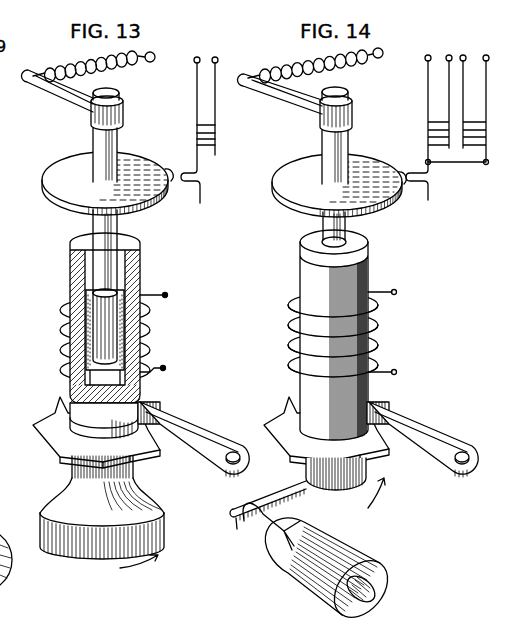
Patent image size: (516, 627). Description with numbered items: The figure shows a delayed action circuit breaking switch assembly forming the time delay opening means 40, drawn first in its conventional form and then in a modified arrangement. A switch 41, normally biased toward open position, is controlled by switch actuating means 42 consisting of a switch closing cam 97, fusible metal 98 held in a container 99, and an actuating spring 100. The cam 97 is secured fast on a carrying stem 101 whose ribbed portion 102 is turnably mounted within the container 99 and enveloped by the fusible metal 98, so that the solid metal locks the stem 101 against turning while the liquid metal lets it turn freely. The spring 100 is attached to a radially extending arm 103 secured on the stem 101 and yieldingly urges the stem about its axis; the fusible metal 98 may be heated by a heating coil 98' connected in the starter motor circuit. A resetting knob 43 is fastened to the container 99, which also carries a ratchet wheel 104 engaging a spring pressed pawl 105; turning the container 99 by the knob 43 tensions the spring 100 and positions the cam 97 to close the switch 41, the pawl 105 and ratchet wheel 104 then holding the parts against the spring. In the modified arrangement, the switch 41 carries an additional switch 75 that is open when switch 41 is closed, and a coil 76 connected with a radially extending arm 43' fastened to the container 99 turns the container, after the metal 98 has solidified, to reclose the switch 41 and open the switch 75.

In FIG. 13, the time delay opening means 40 is at (62, 227).
In FIG. 14, the time delay opening means 40 is at (297, 222).
In FIG. 13, the switch 41 is at (200, 125).
In FIG. 14, the switch 41 is at (438, 125).
In FIG. 13, the switch actuating means 42 is at (51, 337).
In FIG. 14, the switch actuating means 42 is at (276, 336).
In FIG. 13, the resetting knob 43 is at (102, 533).
In FIG. 14, the radially extending arm 43' is at (263, 515).
In FIG. 14, the switch 75 is at (476, 149).
In FIG. 14, the coil 76 is at (364, 550).
In FIG. 13, the switch closing cam 97 is at (62, 168).
In FIG. 14, the switch closing cam 97 is at (300, 162).
In FIG. 13, the fusible metal 98 is at (125, 320).
In FIG. 13, the heating coil 98' is at (127, 360).
In FIG. 14, the heating coil 98' is at (354, 335).
In FIG. 13, the container 99 is at (136, 270).
In FIG. 14, the container 99 is at (370, 276).
In FIG. 13, the actuating spring 100 is at (68, 66).
In FIG. 13, the carrying stem 101 is at (121, 221).
In FIG. 14, the carrying stem 101 is at (352, 212).
In FIG. 13, the ribbed portion 102 is at (95, 322).
In FIG. 13, the radially extending arm 103 is at (60, 93).
In FIG. 13, the ratchet wheel 104 is at (60, 408).
In FIG. 14, the ratchet wheel 104 is at (290, 407).
In FIG. 13, the pawl 105 is at (192, 416).
In FIG. 14, the pawl 105 is at (440, 418).